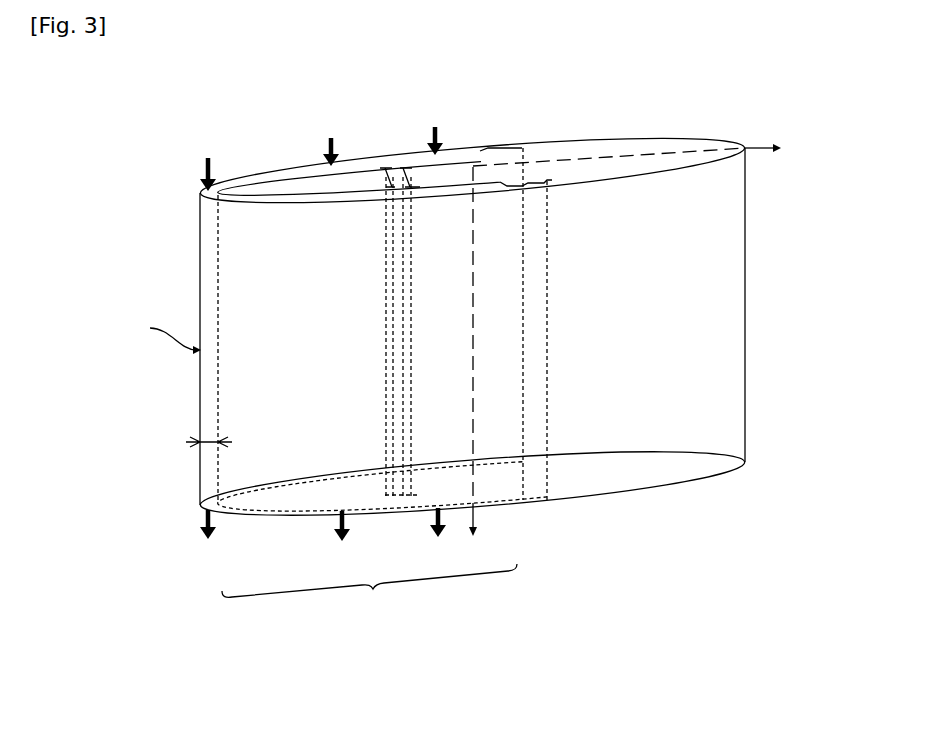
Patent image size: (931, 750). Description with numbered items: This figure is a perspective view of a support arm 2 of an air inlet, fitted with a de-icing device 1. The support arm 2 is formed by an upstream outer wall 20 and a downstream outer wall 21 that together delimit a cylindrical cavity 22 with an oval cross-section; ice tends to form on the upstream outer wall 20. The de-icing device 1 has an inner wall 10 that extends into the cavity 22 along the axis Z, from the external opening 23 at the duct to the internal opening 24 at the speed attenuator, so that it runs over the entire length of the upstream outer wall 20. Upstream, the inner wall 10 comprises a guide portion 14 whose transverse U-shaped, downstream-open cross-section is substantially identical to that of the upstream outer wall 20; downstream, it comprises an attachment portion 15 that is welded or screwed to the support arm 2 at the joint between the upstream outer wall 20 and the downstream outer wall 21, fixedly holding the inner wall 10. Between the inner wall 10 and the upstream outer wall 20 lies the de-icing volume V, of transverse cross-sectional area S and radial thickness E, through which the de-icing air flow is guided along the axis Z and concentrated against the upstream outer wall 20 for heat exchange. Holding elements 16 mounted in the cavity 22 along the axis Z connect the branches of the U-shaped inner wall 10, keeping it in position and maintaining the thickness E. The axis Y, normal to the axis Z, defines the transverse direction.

The de-icing device 1 is at (254, 123).
The support arm 2 is at (121, 141).
The inner wall 10 is at (220, 350).
The guide portion 14 is at (369, 596).
The attachment portion 15 is at (540, 498).
The holding elements 16 is at (385, 350).
The upstream outer wall 20 is at (200, 235).
The downstream outer wall 21 is at (745, 302).
The cylindrical cavity 22 is at (648, 320).
The external opening 23 is at (373, 158).
The internal opening 24 is at (257, 517).